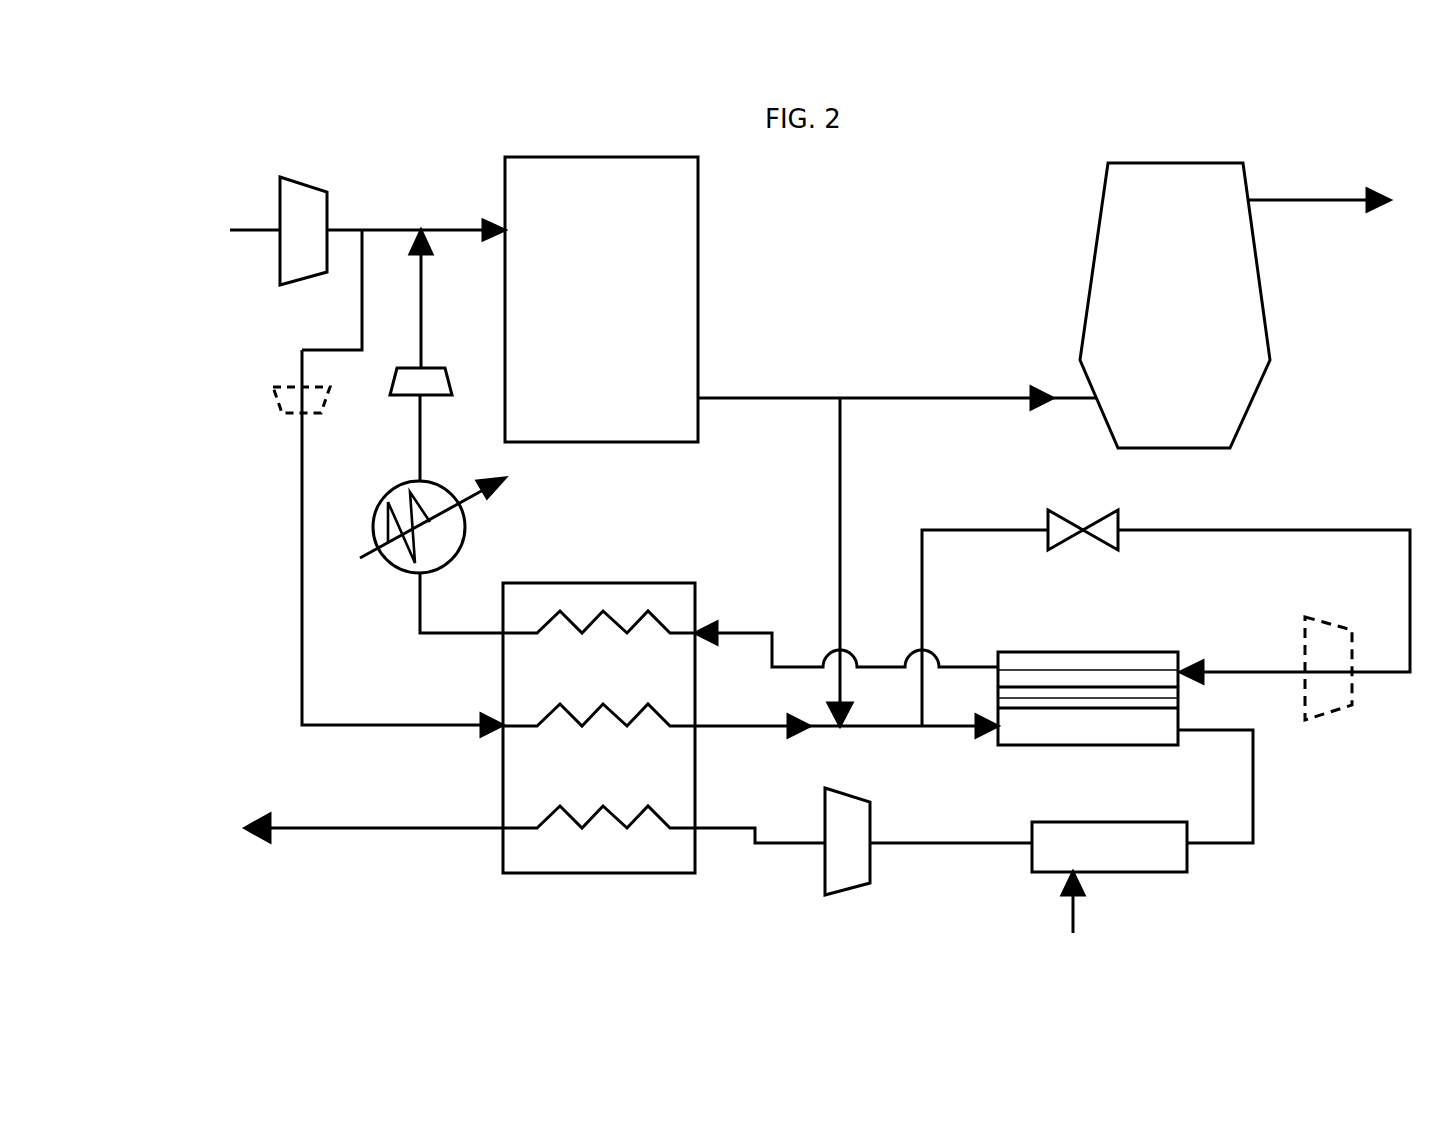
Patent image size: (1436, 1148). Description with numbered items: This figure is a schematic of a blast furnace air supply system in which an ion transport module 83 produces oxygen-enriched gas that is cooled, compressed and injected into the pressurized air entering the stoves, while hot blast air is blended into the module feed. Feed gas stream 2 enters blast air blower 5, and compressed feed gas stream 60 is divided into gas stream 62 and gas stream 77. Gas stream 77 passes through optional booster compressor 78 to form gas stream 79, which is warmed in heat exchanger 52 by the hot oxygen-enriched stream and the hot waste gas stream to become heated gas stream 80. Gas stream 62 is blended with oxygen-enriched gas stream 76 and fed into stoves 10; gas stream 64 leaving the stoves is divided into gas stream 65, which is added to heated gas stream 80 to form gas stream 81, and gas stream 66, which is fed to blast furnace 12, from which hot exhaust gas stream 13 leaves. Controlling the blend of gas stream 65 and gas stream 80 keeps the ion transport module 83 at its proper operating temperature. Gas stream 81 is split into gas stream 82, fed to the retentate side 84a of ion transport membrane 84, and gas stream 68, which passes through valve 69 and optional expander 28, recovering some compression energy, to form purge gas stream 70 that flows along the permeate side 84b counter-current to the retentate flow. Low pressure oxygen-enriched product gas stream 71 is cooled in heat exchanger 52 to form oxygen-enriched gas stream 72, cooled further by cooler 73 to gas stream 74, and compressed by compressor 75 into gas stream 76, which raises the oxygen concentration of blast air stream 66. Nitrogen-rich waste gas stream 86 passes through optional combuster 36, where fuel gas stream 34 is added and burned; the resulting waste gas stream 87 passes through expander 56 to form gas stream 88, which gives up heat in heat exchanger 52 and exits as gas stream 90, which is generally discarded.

The feed gas stream 2 is at (252, 235).
The blast air blower 5 is at (323, 192).
The stoves 10 is at (698, 220).
The blast furnace 12 is at (1098, 232).
The hot exhaust gas stream 13 is at (1325, 197).
The optional expander 28 is at (1333, 718).
The fuel gas stream 34 is at (1070, 907).
The optional combuster 36 is at (1125, 872).
The heat exchanger 52 is at (607, 873).
The expander 56 is at (860, 885).
The compressed feed gas stream 60 is at (350, 230).
The gas stream 62 is at (405, 230).
The gas stream 64 is at (792, 397).
The gas stream 65 is at (843, 500).
The gas stream 66 is at (953, 398).
The gas stream 68 is at (973, 530).
The valve 69 is at (1067, 517).
The purge gas stream 70 is at (1240, 670).
The low pressure oxygen-enriched product gas stream 71 is at (752, 632).
The oxygen-enriched gas stream 72 is at (418, 597).
The cooler 73 is at (370, 523).
The gas stream 74 is at (420, 418).
The compressor 75 is at (447, 380).
The oxygen-enriched gas stream 76 is at (422, 277).
The gas stream 77 is at (362, 308).
The optional booster compressor 78 is at (280, 408).
The gas stream 79 is at (302, 542).
The heated gas stream 80 is at (743, 730).
The gas stream 81 is at (877, 730).
The gas stream 82 is at (955, 728).
The ion transport module 83 is at (1088, 745).
The ion transport membrane 84 is at (1178, 700).
The retentate side 84a is at (1045, 715).
The permeate side 84b is at (1107, 685).
The nitrogen-rich waste gas stream 86 is at (1232, 843).
The waste gas stream 87 is at (912, 843).
The gas stream 88 is at (790, 843).
The gas stream 90 is at (372, 827).